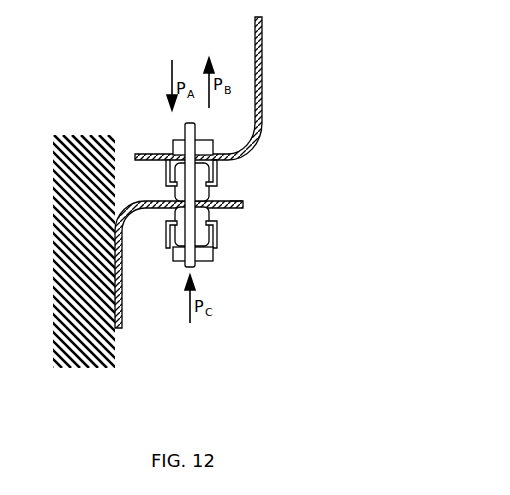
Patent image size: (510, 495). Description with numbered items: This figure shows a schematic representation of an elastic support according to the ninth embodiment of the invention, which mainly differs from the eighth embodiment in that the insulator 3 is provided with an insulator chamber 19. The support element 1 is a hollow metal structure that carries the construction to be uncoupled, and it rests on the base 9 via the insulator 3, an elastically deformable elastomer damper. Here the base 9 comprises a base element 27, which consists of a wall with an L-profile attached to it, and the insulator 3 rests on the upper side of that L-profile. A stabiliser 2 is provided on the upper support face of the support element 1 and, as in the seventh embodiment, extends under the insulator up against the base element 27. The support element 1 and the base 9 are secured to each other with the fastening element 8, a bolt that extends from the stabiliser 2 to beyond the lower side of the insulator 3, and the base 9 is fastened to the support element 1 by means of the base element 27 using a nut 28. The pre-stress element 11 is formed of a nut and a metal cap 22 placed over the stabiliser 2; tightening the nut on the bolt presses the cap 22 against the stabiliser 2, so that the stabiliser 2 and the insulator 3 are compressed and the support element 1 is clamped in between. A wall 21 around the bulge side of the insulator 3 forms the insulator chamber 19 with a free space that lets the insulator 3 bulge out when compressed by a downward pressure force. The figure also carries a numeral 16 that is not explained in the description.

The support element 1 is at (262, 47).
The stabiliser 2 is at (203, 230).
The insulator 3 is at (202, 180).
The fastening element 8 is at (182, 127).
The base 9 is at (90, 340).
The pre-stress element 11 is at (180, 255).
The lower elastic bushing 16 is at (217, 227).
The insulator chamber 19 is at (217, 167).
The wall 21 is at (167, 173).
The cap 22 is at (163, 233).
The base element 27 is at (243, 208).
The nut 28 is at (198, 147).